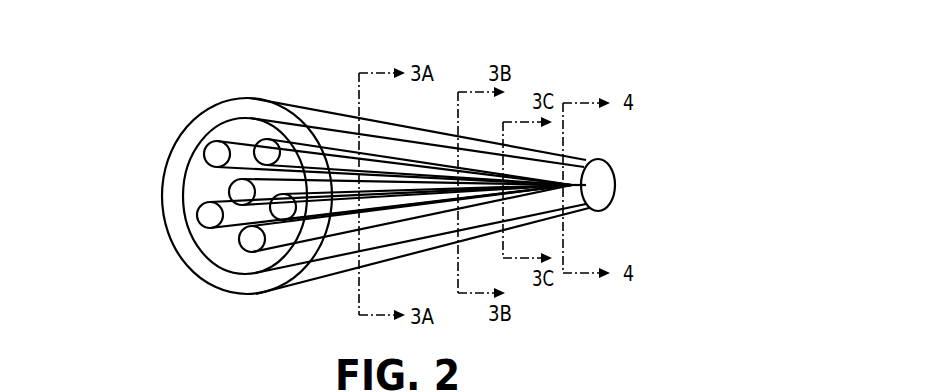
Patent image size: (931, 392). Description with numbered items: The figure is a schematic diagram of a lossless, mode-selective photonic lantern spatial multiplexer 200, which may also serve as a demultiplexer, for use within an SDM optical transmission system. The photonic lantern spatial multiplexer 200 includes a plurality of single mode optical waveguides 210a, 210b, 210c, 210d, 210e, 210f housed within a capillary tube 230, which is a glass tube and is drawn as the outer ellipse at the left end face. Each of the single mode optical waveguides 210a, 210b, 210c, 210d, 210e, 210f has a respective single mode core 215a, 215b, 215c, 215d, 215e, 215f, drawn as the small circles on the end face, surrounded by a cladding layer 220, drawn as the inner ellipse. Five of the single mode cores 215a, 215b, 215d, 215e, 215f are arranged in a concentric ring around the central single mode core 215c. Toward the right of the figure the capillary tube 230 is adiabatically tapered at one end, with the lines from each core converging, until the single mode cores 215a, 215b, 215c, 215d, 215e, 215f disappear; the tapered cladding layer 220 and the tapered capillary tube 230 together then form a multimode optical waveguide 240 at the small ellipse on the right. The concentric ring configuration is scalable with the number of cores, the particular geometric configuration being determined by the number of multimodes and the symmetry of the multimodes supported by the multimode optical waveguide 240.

The photonic lantern spatial multiplexer 200 is at (130, 50).
The capillary tube 230 is at (230, 100).
The cladding layer 220 is at (237, 117).
The multimode optical waveguide 240 is at (573, 208).
The single mode optical waveguide 210a is at (268, 152).
The single mode optical waveguide 210b is at (217, 154).
The single mode optical waveguide 210c is at (242, 192).
The single mode optical waveguide 210d is at (210, 215).
The single mode optical waveguide 210e is at (252, 239).
The single mode optical waveguide 210f is at (284, 208).
The single mode core 215a is at (336, 150).
The single mode core 215b is at (212, 167).
The single mode core 215c is at (230, 194).
The single mode core 215d is at (206, 228).
The single mode core 215e is at (248, 254).
The single mode core 215f is at (306, 222).